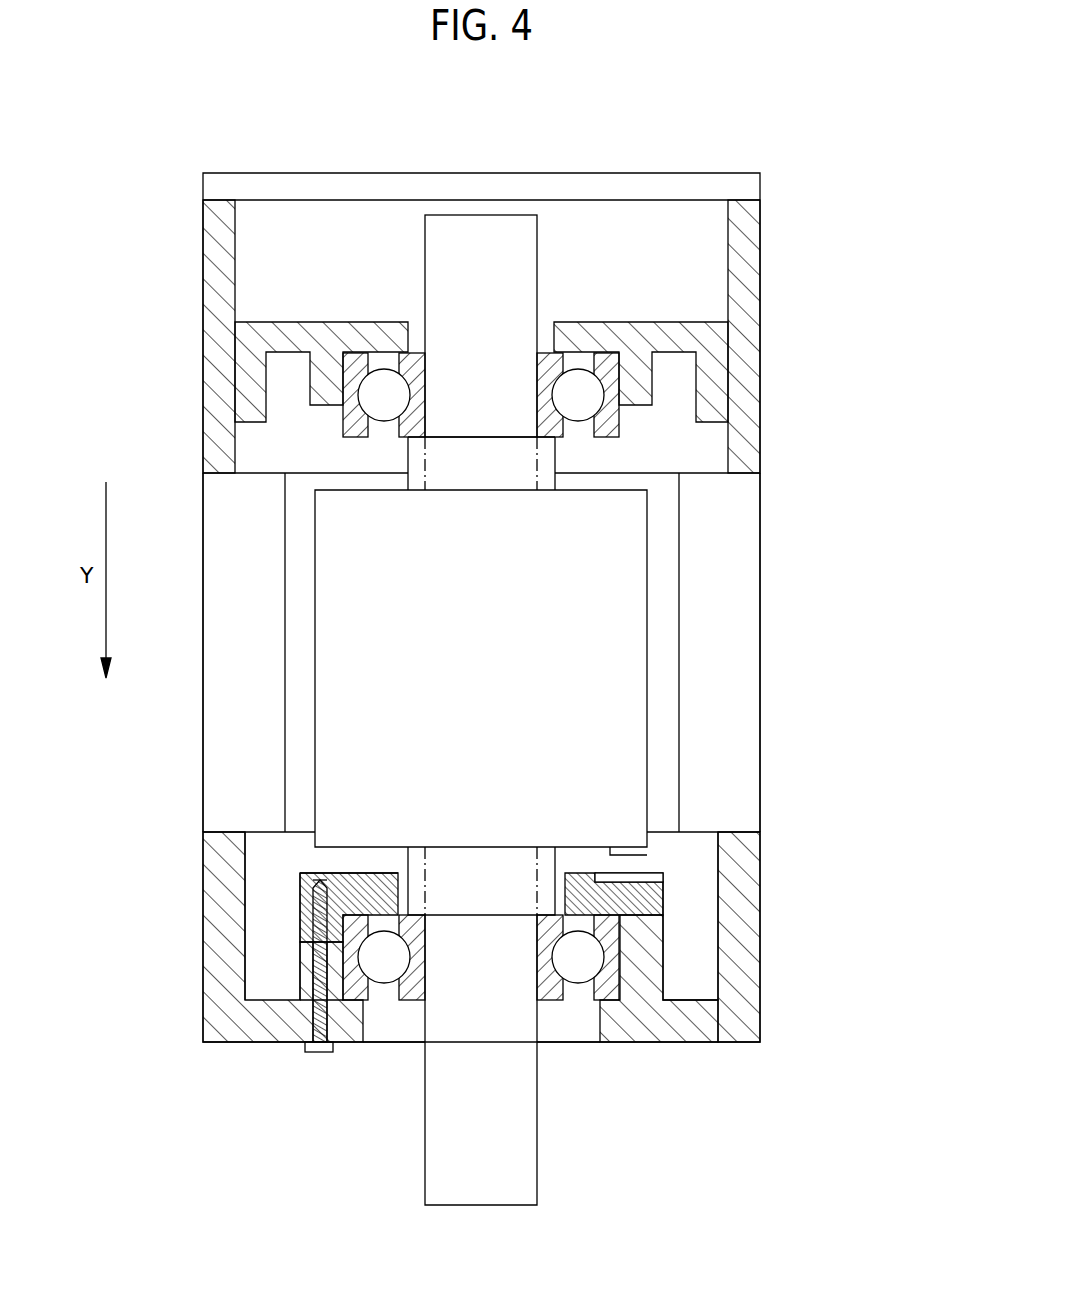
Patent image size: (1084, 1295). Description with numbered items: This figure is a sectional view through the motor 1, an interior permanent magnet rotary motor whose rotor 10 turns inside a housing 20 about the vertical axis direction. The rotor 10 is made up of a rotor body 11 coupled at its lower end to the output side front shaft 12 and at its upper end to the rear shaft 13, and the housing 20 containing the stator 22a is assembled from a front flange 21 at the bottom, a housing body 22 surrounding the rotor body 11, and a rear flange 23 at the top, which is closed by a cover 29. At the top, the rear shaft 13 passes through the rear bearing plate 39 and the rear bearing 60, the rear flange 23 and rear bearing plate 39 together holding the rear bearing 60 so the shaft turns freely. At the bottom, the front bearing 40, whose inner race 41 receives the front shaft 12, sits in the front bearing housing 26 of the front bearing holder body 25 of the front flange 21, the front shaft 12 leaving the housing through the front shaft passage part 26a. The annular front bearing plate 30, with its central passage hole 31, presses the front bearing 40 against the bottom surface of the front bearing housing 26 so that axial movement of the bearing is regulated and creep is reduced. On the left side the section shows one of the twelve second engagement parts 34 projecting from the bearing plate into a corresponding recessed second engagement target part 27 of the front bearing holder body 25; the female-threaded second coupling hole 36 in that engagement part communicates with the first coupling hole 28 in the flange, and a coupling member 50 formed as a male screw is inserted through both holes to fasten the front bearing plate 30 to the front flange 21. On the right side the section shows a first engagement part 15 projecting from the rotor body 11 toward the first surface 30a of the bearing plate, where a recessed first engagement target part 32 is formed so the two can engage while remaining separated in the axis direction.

The motor 1 is at (818, 135).
The rotor 10 is at (512, 200).
The rotor body 11 is at (618, 742).
The front shaft 12 is at (537, 1157).
The rear shaft 13 is at (483, 235).
The first engagement part 15 is at (650, 851).
The housing 20 is at (840, 393).
The front flange 21 is at (763, 955).
The housing body 22 is at (763, 651).
The stator 22a is at (740, 523).
The rear flange 23 is at (764, 331).
The front bearing holder body 25 is at (667, 962).
The front bearing housing 26 is at (623, 985).
The front shaft passage part 26a is at (567, 1030).
The second engagement target part 27 is at (305, 951).
The first coupling hole 28 is at (322, 1020).
The cover 29 is at (648, 173).
The front bearing plate 30 is at (667, 900).
The first surface 30a is at (357, 873).
The passage hole 31 is at (403, 878).
The first engagement target part 32 is at (650, 878).
The second engagement part 34 is at (305, 918).
The second coupling hole 36 is at (315, 879).
The rear bearing plate 39 is at (683, 322).
The front bearing 40 is at (618, 990).
The inner race 41 is at (417, 990).
The coupling member 50 is at (320, 1054).
The rear bearing 60 is at (625, 431).